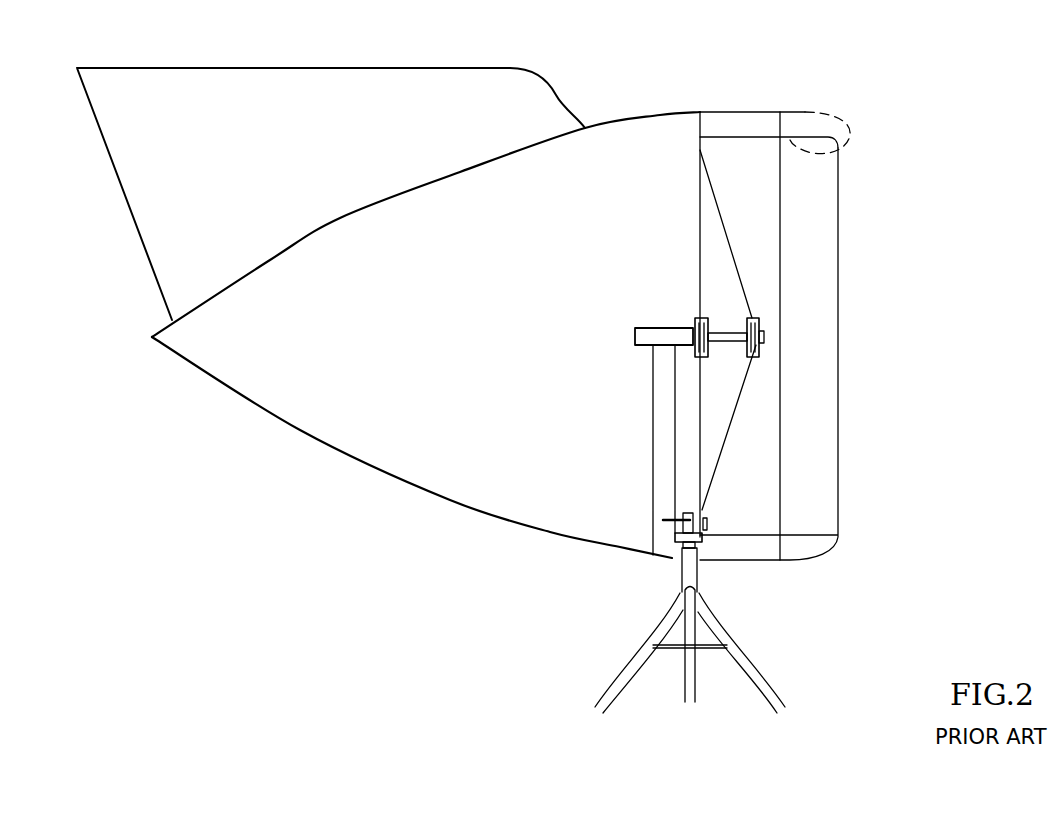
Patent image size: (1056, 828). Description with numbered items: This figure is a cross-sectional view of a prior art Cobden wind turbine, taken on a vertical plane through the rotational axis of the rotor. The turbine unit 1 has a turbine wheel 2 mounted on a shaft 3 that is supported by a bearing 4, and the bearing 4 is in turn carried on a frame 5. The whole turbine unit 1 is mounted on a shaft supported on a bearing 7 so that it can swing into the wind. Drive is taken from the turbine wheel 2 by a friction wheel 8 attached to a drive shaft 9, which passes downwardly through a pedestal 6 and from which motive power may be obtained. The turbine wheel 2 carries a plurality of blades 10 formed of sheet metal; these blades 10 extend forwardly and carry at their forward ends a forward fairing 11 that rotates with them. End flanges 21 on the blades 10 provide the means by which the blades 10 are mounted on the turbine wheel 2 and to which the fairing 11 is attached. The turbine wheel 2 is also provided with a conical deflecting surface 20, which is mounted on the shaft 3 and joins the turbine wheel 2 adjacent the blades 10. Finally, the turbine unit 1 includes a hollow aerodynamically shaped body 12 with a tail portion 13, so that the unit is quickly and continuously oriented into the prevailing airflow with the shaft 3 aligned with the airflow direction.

The turbine unit 1 is at (245, 402).
The turbine wheel 2 is at (700, 198).
The shaft 3 is at (728, 343).
The bearing 4 is at (663, 328).
The frame 5 is at (675, 427).
The pedestal 6 is at (750, 667).
The bearing 7 is at (688, 563).
The friction wheel 8 is at (668, 540).
The drive shaft 9 is at (700, 552).
The blades 10 is at (738, 125).
The forward fairing 11 is at (828, 118).
The hollow aerodynamically shaped body 12 is at (373, 200).
The tail portion 13 is at (558, 80).
The conical deflecting surface 20 is at (733, 257).
The end flanges 21 is at (705, 118).